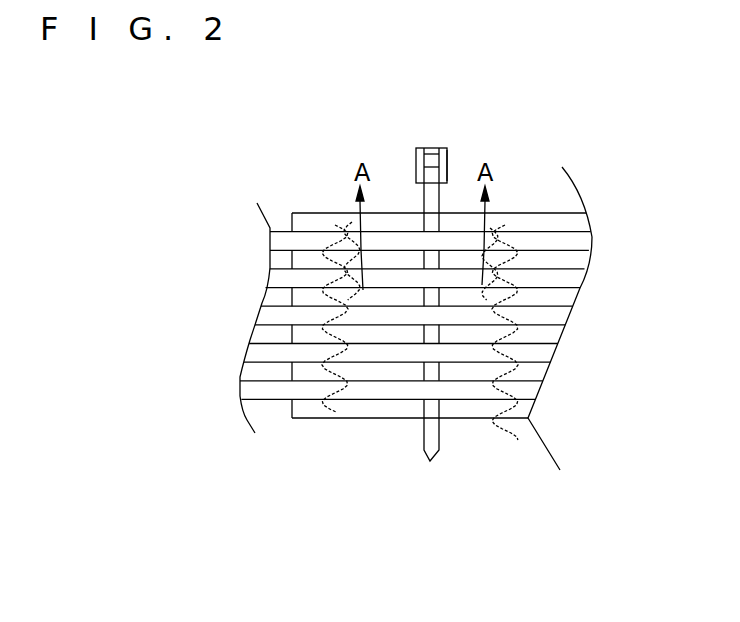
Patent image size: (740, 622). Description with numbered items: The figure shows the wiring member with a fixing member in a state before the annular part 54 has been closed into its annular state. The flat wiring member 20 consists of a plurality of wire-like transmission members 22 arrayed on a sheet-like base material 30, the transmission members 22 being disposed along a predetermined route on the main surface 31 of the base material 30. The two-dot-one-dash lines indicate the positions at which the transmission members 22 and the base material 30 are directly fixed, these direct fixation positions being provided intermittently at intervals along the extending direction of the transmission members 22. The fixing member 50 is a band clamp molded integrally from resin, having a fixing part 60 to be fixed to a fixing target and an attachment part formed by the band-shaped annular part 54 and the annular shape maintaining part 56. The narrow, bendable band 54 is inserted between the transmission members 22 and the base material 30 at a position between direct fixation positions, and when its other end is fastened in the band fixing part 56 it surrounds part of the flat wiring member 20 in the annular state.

The flat wiring member 20 is at (415, 363).
The wire-like transmission members 22 is at (373, 358).
The base material 30 is at (397, 414).
The main surface 31 is at (497, 414).
The fixing member 50 is at (413, 157).
The annular part 54 is at (438, 447).
The annular shape maintaining part 56 is at (448, 165).
The fixing part 60 is at (432, 147).